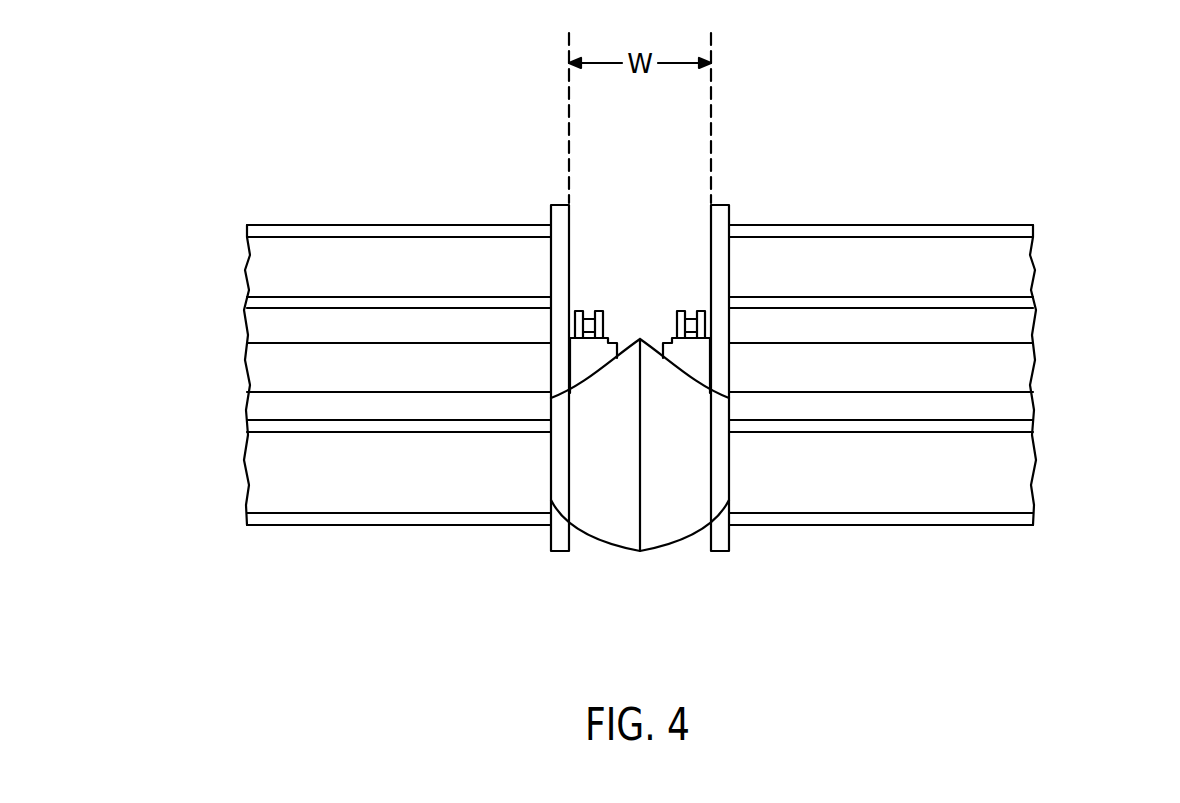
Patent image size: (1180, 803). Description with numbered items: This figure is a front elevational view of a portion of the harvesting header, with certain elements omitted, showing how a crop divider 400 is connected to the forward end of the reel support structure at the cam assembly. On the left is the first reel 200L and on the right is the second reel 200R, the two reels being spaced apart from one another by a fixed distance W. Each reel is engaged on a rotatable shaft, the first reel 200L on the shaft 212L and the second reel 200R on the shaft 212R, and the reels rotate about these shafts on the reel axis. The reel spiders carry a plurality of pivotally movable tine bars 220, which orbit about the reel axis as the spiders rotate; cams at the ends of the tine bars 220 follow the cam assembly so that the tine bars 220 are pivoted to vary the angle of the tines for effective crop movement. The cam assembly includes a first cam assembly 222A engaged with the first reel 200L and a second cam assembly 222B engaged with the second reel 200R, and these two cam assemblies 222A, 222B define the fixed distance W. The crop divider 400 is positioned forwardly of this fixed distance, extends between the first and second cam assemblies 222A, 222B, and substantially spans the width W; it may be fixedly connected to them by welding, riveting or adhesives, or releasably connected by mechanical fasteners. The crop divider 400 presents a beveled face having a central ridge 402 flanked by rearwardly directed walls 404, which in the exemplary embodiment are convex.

The first reel 200L is at (348, 206).
The second reel 200R is at (932, 206).
The tine bars 220 is at (290, 237).
The shaft 212L is at (247, 368).
The shaft 212R is at (1033, 368).
The first cam assembly 222A is at (551, 267).
The second cam assembly 222B is at (729, 267).
The crop divider 400 is at (634, 480).
The central ridge 402 is at (640, 517).
The rearwardly directed walls 404 is at (600, 493).